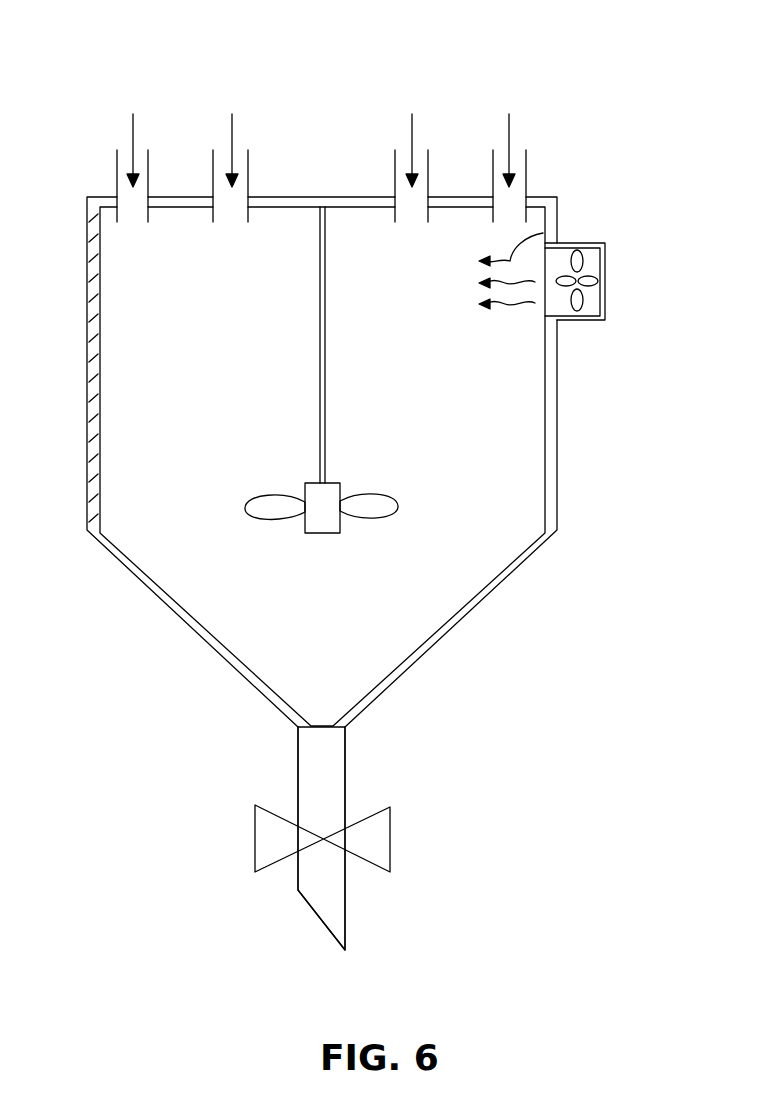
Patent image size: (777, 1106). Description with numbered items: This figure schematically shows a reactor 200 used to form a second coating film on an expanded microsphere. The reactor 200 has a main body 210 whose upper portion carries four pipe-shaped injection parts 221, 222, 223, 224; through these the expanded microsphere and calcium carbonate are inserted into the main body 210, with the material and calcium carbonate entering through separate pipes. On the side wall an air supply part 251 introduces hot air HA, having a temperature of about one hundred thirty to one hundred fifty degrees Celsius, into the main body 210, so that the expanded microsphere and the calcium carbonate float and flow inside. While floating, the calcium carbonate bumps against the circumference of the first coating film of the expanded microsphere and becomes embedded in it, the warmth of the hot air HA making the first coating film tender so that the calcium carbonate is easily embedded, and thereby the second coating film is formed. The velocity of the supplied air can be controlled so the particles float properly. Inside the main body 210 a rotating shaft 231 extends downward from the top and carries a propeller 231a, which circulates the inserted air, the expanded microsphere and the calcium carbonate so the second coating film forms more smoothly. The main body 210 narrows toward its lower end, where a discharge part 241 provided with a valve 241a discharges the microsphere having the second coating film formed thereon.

The reactor 200 is at (505, 50).
The main body 210 is at (557, 418).
The injection part 221 is at (117, 160).
The injection part 222 is at (248, 180).
The injection part 223 is at (395, 160).
The injection part 224 is at (526, 180).
The rotating shaft 231 is at (325, 383).
The propeller 231a is at (378, 493).
The discharge part 241 is at (345, 770).
The valve 241a is at (390, 838).
The air supply part 251 is at (570, 322).
The hot air HA is at (545, 232).